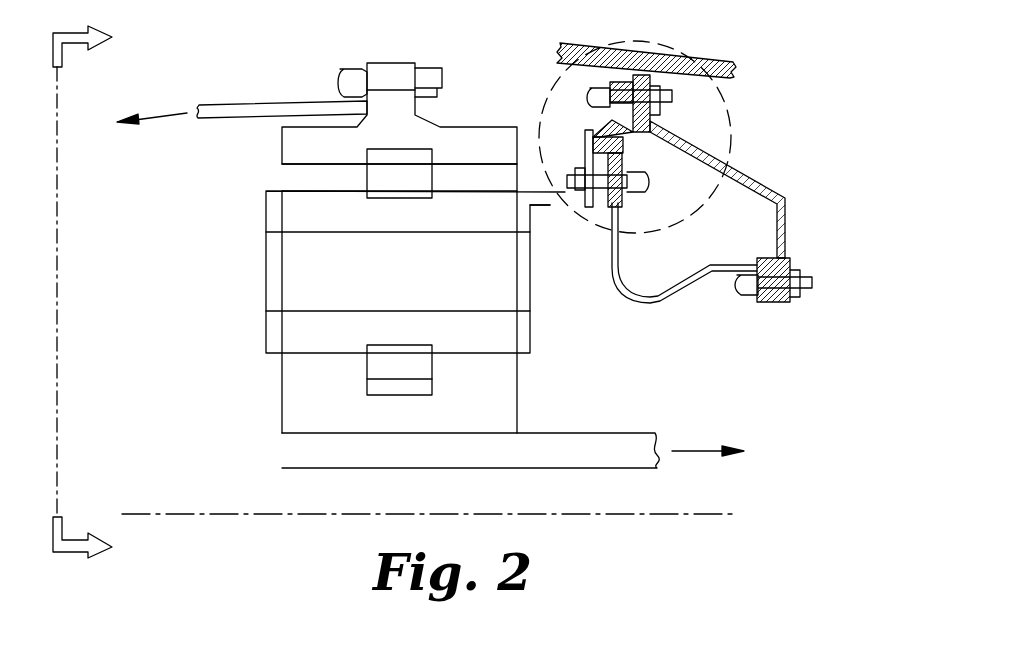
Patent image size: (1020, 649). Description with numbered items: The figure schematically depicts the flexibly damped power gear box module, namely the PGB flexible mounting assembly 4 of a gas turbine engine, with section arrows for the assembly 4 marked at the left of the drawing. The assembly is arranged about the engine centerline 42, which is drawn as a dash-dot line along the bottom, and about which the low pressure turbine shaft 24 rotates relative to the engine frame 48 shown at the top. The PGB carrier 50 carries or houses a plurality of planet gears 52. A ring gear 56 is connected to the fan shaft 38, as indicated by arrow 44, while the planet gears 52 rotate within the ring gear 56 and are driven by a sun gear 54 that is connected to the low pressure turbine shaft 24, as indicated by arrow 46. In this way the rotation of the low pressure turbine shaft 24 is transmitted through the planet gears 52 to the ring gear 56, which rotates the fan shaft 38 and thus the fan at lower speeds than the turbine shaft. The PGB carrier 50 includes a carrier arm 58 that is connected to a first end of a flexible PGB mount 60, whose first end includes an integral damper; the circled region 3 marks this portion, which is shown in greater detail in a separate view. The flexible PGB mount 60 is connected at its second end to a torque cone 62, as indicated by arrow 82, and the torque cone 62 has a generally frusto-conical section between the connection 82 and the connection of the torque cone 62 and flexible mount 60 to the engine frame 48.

The detail view circle 3 is at (728, 111).
The PGB flexible mounting assembly 4 is at (96, 295).
The low pressure turbine shaft 24 is at (567, 457).
The fan shaft 38 is at (227, 103).
The engine centerline 42 is at (228, 513).
The arrow 44 is at (165, 120).
The arrow 46 is at (692, 451).
The engine frame 48 is at (657, 46).
The PGB carrier 50 is at (270, 330).
The planet gears 52 is at (290, 176).
The sun gear 54 is at (293, 407).
The ring gear 56 is at (290, 148).
The carrier arm 58 is at (550, 205).
The flexible PGB mount 60 is at (614, 280).
The torque cone 62 is at (787, 208).
The connection 82 is at (818, 283).